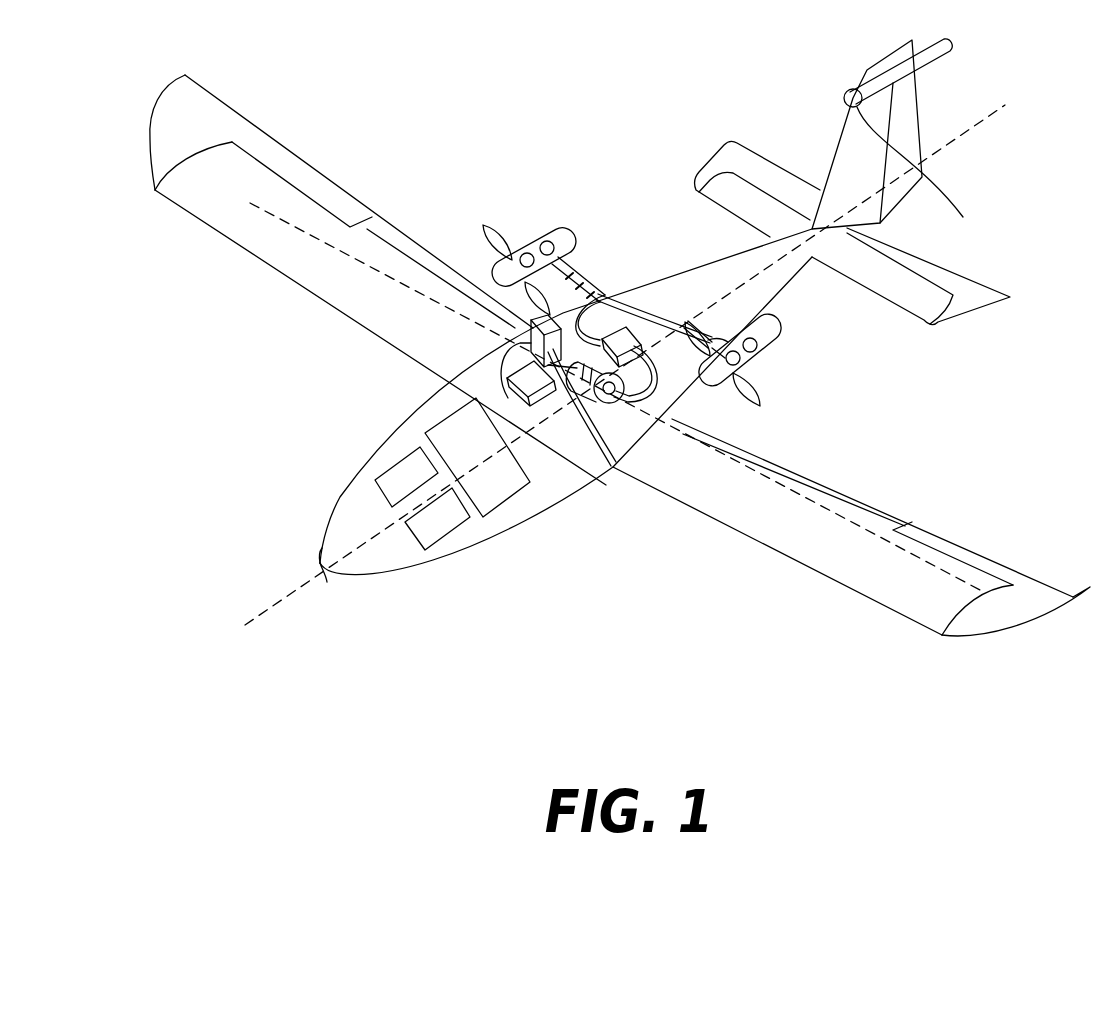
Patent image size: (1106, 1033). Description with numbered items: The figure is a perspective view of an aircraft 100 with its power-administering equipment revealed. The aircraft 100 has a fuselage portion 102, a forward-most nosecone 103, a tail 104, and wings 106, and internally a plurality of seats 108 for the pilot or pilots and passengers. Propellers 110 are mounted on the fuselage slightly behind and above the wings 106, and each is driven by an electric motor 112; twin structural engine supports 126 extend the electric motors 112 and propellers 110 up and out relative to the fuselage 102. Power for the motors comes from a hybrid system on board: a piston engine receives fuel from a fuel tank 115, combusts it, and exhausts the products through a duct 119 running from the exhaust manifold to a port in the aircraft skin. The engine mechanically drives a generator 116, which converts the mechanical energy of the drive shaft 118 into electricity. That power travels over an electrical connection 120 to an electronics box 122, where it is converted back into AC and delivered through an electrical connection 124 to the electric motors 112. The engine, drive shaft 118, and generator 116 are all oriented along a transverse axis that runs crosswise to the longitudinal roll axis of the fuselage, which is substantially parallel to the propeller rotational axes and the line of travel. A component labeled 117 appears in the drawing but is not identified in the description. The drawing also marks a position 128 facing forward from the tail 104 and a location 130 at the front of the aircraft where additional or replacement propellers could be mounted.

The aircraft 100 is at (620, 402).
The fuselage portion 102 is at (506, 437).
The nosecone 103 is at (261, 545).
The tail 104 is at (852, 182).
The wings 106 is at (620, 355).
The seats 108 is at (419, 466).
The propellers 110 is at (653, 279).
The electric motors 112 is at (670, 271).
The fuel tank 115 is at (450, 370).
The generator 116 is at (600, 404).
The connector box 117 is at (494, 342).
The drive shaft 118 is at (526, 396).
The duct 119 is at (588, 438).
The electrical connection 120 is at (721, 385).
The electronics box 122 is at (652, 341).
The electrical connection 124 is at (644, 286).
The structural engine supports 126 is at (678, 263).
The position 128 is at (917, 176).
The location 130 is at (328, 604).